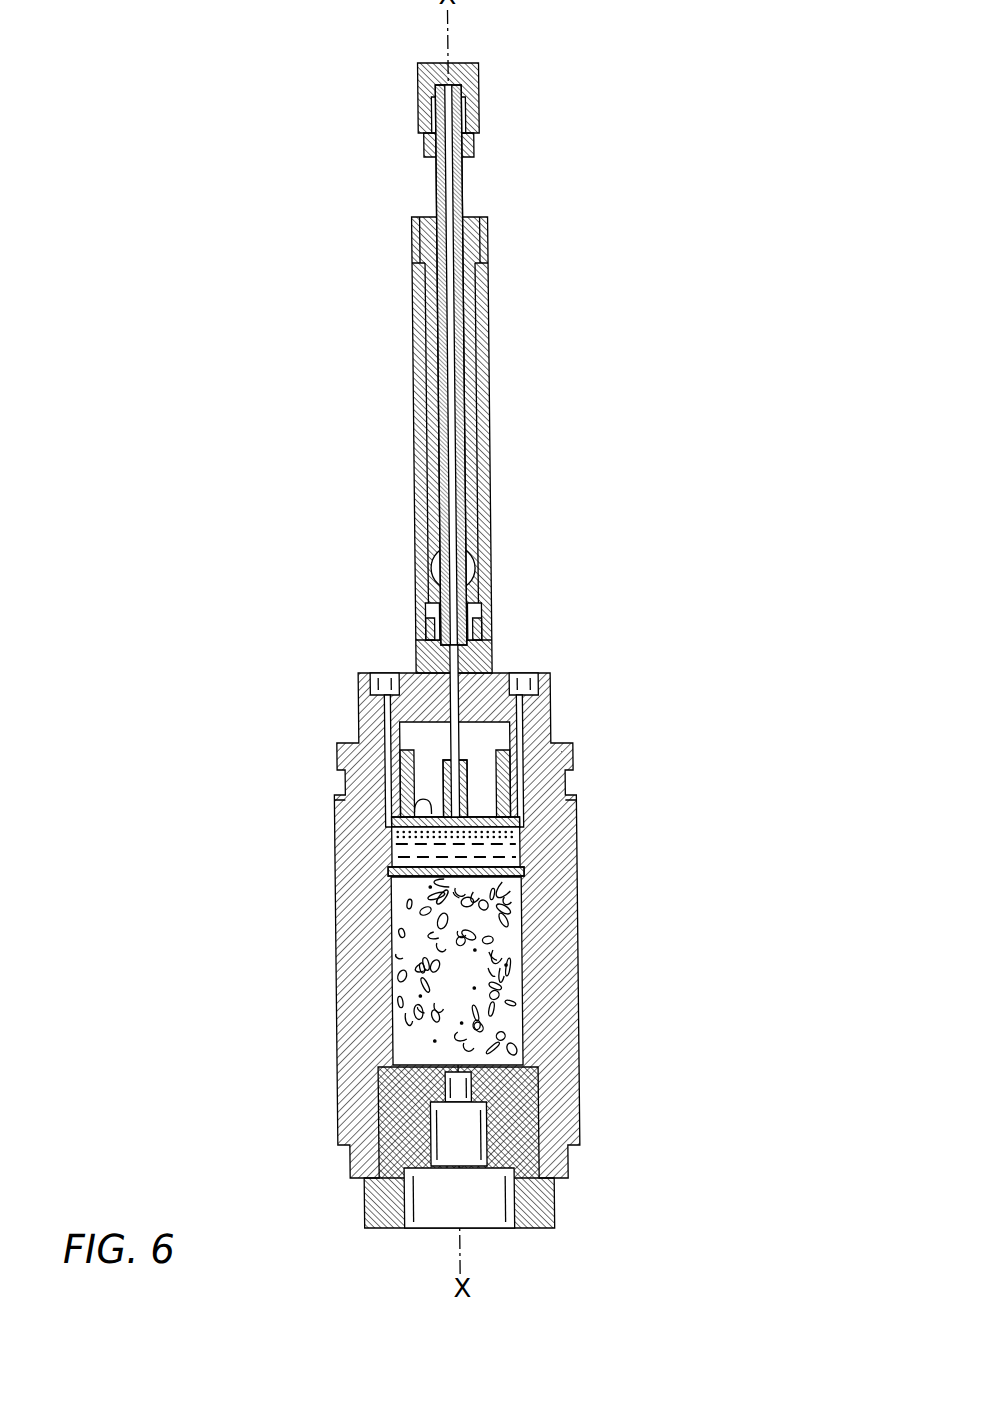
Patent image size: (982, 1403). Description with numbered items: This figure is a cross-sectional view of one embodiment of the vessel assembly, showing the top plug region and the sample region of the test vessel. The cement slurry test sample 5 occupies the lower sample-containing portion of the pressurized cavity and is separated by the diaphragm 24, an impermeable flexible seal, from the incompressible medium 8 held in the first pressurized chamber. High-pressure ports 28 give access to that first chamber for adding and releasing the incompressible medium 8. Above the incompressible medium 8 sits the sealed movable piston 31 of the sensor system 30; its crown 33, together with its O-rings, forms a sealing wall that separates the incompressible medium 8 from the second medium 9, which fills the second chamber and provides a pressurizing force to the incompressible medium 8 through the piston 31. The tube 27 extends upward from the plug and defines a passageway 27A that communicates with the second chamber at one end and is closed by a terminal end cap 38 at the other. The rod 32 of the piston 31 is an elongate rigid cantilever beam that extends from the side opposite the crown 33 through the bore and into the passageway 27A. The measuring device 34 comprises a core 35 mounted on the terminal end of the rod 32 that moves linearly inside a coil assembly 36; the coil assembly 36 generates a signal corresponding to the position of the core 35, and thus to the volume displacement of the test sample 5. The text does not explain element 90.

The terminal end cap 38 is at (478, 97).
The passageway 27A is at (461, 180).
The tube 27 is at (486, 355).
The measuring device 34 is at (500, 473).
The coil assembly 36 is at (408, 563).
The core 35 is at (454, 604).
The high-pressure ports 28 is at (377, 673).
The rod 32 is at (493, 733).
The second medium 9 is at (403, 725).
The sensor system 30 is at (468, 780).
The piston 31 is at (507, 802).
The spring seal 90 is at (395, 800).
The incompressible medium 8 is at (505, 847).
The crown 33 is at (432, 872).
The diaphragm 24 is at (515, 873).
The cement slurry test sample 5 is at (515, 1003).